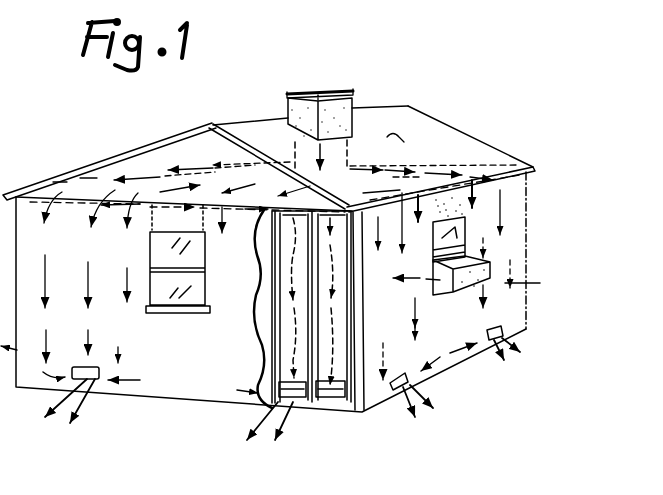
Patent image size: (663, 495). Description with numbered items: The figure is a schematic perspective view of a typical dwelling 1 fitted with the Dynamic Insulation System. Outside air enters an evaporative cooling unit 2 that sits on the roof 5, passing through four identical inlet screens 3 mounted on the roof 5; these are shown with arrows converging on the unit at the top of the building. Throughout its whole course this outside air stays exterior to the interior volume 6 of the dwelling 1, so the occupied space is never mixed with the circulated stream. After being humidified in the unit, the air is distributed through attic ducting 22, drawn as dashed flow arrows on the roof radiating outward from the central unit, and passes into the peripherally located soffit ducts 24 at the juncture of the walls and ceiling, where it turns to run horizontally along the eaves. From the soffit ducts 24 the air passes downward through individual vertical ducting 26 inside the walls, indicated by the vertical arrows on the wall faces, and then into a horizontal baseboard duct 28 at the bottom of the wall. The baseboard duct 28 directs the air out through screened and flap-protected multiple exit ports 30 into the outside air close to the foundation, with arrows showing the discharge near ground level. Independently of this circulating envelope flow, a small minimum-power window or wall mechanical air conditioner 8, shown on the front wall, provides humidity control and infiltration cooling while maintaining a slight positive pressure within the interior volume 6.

The dwelling 1 is at (399, 90).
The evaporative cooling unit 2 is at (318, 82).
The inlet screens 3 is at (300, 113).
The roof 5 is at (412, 143).
The interior volume 6 is at (386, 292).
The mechanical air conditioner 8 is at (440, 295).
The attic ducting 22 is at (275, 207).
The soffit ducts 24 is at (82, 205).
The vertical ducting 26 is at (299, 304).
The baseboard duct 28 is at (333, 402).
The exit ports 30 is at (100, 380).